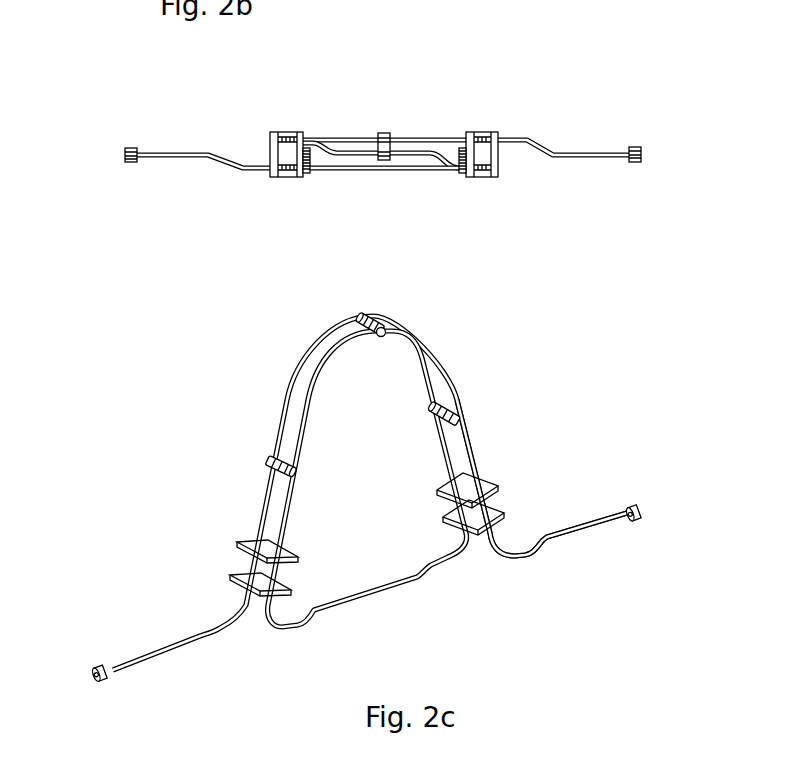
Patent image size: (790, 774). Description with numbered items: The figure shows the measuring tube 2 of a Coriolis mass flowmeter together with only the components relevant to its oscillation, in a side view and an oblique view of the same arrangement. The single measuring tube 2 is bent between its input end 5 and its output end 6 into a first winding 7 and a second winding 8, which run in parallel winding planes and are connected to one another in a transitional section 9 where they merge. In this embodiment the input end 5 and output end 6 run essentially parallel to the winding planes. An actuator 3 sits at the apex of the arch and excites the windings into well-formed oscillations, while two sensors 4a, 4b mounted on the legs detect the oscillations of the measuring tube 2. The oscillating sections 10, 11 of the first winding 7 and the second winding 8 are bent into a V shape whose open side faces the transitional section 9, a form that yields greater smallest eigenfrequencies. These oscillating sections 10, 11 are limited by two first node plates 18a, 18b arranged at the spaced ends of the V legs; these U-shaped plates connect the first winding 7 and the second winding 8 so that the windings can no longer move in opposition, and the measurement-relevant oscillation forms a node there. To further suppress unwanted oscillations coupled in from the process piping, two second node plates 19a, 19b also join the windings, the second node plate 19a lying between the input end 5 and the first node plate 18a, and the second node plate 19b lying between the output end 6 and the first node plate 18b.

In FIG. 2b, the measuring tube 2 is at (545, 142).
In FIG. 2c, the measuring tube 2 is at (455, 372).
In FIG. 2c, the actuator 3 is at (368, 315).
In FIG. 2c, the sensor 4a is at (270, 460).
In FIG. 2c, the sensor 4b is at (458, 412).
In FIG. 2b, the input end 5 is at (128, 150).
In FIG. 2c, the input end 5 is at (641, 508).
In FIG. 2b, the output end 6 is at (633, 147).
In FIG. 2c, the output end 6 is at (93, 665).
In FIG. 2b, the first winding 7 is at (355, 172).
In FIG. 2c, the first winding 7 is at (435, 343).
In FIG. 2b, the second winding 8 is at (337, 138).
In FIG. 2c, the second winding 8 is at (292, 365).
In FIG. 2b, the transitional section 9 is at (388, 15).
In FIG. 2c, the transitional section 9 is at (413, 605).
In FIG. 2c, the oscillating section 10 is at (603, 348).
In FIG. 2c, the oscillating section 11 is at (550, 245).
In FIG. 2b, the first node plate 18a is at (268, 135).
In FIG. 2c, the first node plate 18a is at (245, 543).
In FIG. 2b, the first node plate 18b is at (500, 133).
In FIG. 2c, the first node plate 18b is at (490, 485).
In FIG. 2c, the second node plate 19a is at (238, 578).
In FIG. 2c, the second node plate 19b is at (505, 512).